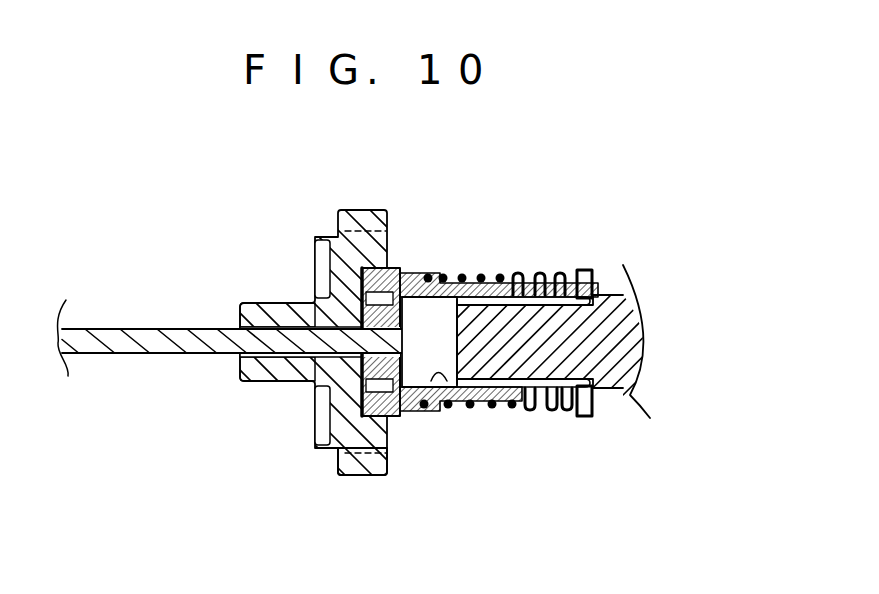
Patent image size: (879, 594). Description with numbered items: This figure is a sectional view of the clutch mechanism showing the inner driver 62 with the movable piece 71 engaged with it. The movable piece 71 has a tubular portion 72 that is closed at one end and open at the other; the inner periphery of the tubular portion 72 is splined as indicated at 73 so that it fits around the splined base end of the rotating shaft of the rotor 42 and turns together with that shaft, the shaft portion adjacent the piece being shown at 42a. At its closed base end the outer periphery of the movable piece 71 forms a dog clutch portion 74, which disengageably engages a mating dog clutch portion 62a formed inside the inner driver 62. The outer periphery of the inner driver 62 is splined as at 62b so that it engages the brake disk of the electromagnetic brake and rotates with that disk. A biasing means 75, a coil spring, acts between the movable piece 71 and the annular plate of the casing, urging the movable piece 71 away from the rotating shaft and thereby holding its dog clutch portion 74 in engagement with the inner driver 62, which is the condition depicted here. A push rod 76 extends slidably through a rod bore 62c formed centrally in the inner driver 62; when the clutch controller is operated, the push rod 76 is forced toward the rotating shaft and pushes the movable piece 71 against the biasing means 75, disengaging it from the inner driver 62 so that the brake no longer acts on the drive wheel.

The rotor 42 is at (616, 346).
The shaft neck portion 42a is at (542, 388).
The inner driver 62 is at (384, 243).
The dog clutch portion 62a is at (395, 414).
The splined outer periphery 62b is at (348, 478).
The rod bore 62c is at (268, 358).
The movable piece 71 is at (404, 340).
The tubular portion 72 is at (494, 281).
The splined inner periphery 73 is at (446, 378).
The dog clutch portion 74 is at (360, 280).
The biasing means 75 is at (566, 413).
The push rod 76 is at (128, 344).